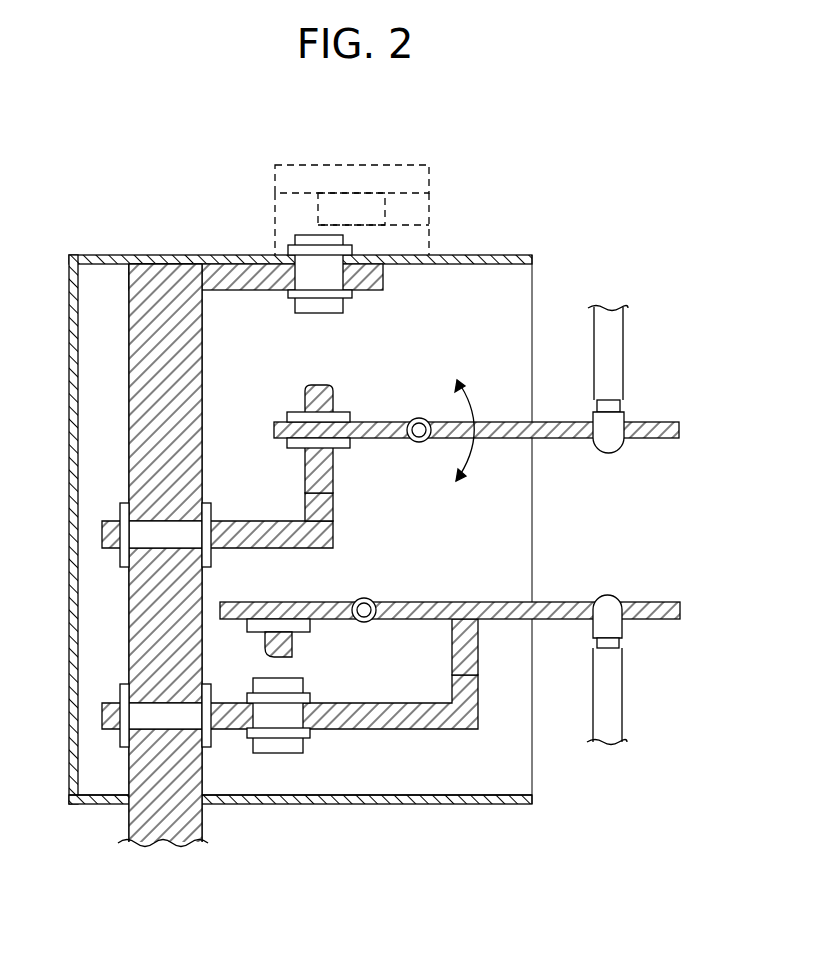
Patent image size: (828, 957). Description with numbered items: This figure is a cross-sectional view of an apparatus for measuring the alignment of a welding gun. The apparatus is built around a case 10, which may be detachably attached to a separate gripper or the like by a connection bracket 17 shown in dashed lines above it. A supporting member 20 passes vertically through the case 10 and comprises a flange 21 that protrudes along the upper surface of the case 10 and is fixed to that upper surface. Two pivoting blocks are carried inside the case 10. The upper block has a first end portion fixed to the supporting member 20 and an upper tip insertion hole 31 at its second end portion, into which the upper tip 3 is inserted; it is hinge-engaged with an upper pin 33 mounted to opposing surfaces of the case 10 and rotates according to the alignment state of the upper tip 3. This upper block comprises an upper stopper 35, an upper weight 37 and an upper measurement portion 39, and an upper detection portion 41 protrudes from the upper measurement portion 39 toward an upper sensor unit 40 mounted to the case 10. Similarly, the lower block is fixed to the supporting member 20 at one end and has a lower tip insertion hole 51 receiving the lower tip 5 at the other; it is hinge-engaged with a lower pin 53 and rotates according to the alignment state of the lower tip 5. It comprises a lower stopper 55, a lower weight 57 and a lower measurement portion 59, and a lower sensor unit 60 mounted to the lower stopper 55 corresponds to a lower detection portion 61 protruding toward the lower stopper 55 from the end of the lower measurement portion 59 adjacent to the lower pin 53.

The case 10 is at (487, 255).
The connection bracket 17 is at (352, 170).
The supporting member 20 is at (148, 821).
The flange 21 is at (165, 272).
The upper tip 3 is at (614, 352).
The lower tip 5 is at (615, 714).
The upper tip insertion hole 31 is at (618, 452).
The upper pin 33 is at (419, 418).
The upper stopper 35 is at (333, 523).
The upper weight 37 is at (333, 467).
The upper measurement portion 39 is at (502, 428).
The upper sensor unit 40 is at (299, 239).
The upper detection portion 41 is at (332, 394).
The lower tip insertion hole 51 is at (620, 646).
The lower pin 53 is at (364, 598).
The lower stopper 55 is at (410, 730).
The lower weight 57 is at (478, 645).
The lower measurement portion 59 is at (420, 600).
The lower sensor unit 60 is at (305, 746).
The lower detection portion 61 is at (292, 645).